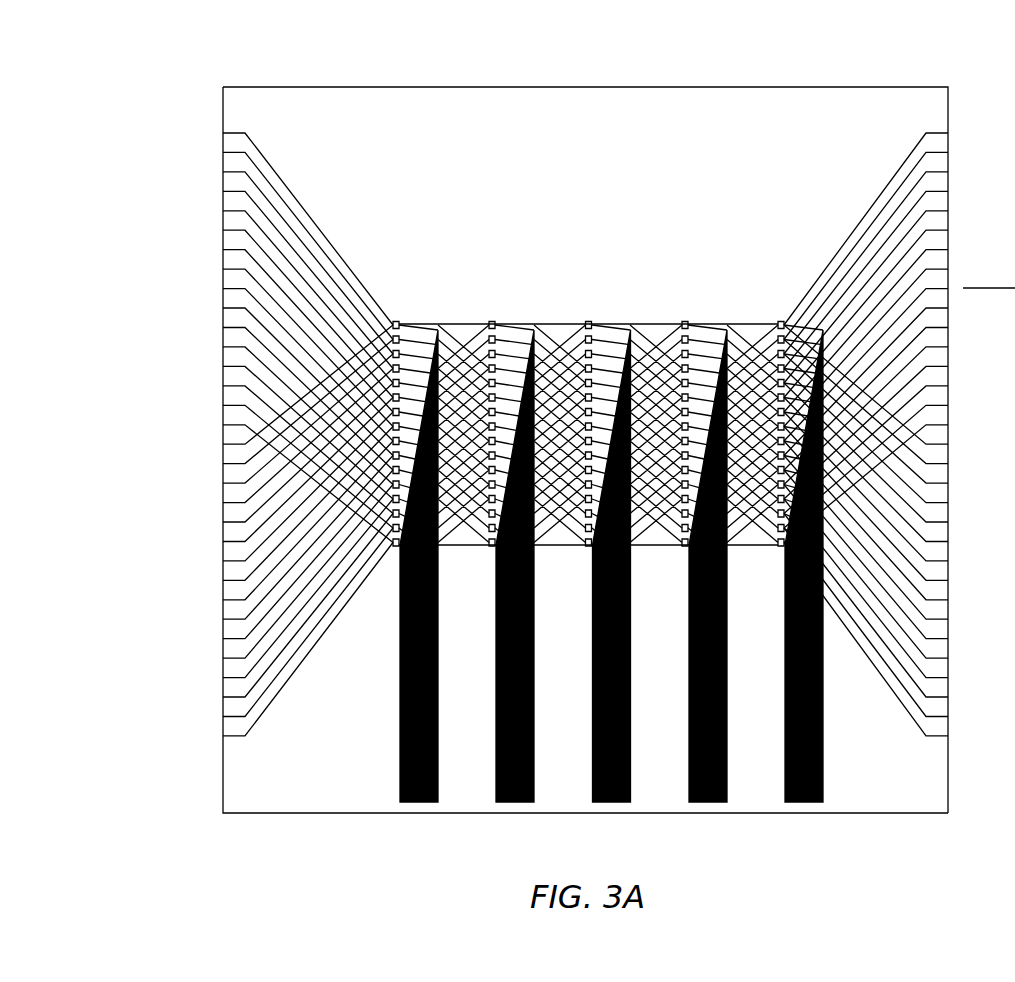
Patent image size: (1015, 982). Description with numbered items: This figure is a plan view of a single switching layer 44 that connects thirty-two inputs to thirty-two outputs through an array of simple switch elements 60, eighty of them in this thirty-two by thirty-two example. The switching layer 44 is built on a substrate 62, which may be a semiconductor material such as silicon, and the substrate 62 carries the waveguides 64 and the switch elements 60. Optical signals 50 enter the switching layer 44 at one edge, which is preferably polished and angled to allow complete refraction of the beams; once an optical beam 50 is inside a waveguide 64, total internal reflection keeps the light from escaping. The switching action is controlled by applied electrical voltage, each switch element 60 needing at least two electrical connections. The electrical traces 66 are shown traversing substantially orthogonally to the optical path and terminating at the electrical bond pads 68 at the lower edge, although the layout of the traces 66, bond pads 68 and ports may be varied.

The switching layer 44 is at (215, 76).
The optical signals 50 is at (213, 187).
The switch elements 60 is at (589, 321).
The substrate 62 is at (928, 112).
The waveguides 64 is at (256, 142).
The electrical traces 66 is at (400, 781).
The electrical bond pads 68 is at (806, 803).